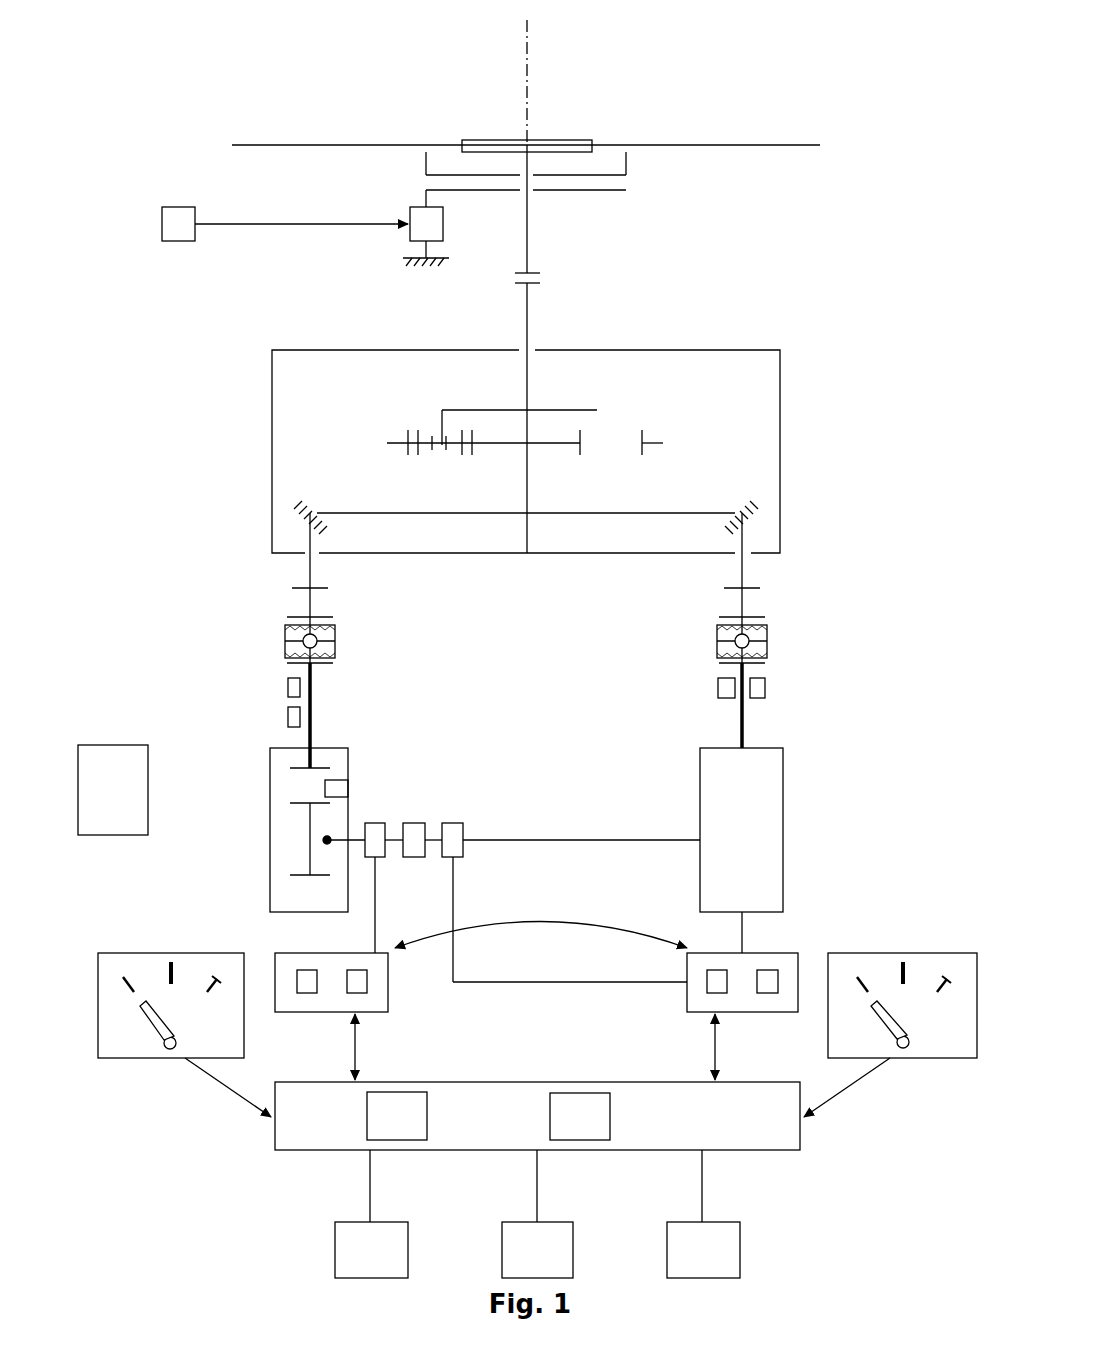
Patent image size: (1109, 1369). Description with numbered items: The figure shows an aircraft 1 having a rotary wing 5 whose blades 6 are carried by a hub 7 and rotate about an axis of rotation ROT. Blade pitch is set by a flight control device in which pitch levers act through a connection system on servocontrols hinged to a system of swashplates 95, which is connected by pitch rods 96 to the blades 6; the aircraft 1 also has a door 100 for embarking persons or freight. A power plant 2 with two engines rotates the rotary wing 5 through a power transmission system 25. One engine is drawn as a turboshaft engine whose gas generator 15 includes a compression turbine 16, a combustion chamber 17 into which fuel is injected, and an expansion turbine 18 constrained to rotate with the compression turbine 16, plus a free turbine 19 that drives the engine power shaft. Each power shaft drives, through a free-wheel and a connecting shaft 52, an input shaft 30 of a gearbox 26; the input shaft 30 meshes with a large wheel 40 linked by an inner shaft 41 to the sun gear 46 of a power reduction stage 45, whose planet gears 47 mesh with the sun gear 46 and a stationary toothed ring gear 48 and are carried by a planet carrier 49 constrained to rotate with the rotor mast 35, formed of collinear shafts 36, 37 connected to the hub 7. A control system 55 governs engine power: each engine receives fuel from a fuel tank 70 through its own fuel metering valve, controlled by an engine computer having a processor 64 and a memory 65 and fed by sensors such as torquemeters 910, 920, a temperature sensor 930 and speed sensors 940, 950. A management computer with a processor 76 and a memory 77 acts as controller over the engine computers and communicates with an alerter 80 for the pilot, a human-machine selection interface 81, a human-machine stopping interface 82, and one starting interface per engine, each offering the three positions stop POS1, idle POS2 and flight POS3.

The aircraft 1 is at (870, 180).
The power plant 2 is at (852, 430).
The rotary wing 5 is at (680, 72).
The blades 6 is at (765, 145).
The hub 7 is at (490, 140).
The power transmission system 25 is at (240, 465).
The gearbox 26 is at (272, 402).
The input shaft 30 is at (308, 565).
The rotor mast 35 is at (560, 275).
The collinear shaft 36 is at (527, 300).
The collinear shaft 37 is at (525, 240).
The large wheel 40 is at (692, 513).
The inner shaft 41 is at (527, 463).
The power reduction stage 45 is at (672, 428).
The sun gear 46 is at (553, 445).
The planet gears 47 is at (427, 453).
The toothed ring gear 48 is at (400, 440).
The planet carrier 49 is at (497, 408).
The connecting shaft 52 is at (312, 600).
The control system 55 is at (224, 1190).
The processor 64 is at (304, 968).
The memory 65 is at (357, 982).
The fuel tank 70 is at (415, 858).
The processor 76 is at (580, 1116).
The memory 77 is at (397, 1116).
The alerter 80 is at (371, 1214).
The human-machine selection interface 81 is at (537, 1214).
The human-machine stopping interface 82 is at (703, 1214).
The system of swashplates 95 is at (405, 190).
The pitch rods 96 is at (425, 165).
The door 100 is at (100, 745).
The gas generator 15 is at (268, 868).
The compression turbine 16 is at (297, 897).
The combustion chamber 17 is at (285, 830).
The expansion turbine 18 is at (297, 800).
The free turbine 19 is at (297, 766).
The torquemeter 910 is at (766, 688).
The torquemeter 920 is at (288, 717).
The temperature sensor 930 is at (338, 778).
The speed sensor 940 is at (718, 690).
The speed sensor 950 is at (288, 688).
The axis of rotation ROT is at (527, 68).
The stop position POS1 is at (126, 978).
The idle position POS2 is at (171, 960).
The flight position POS3 is at (212, 992).